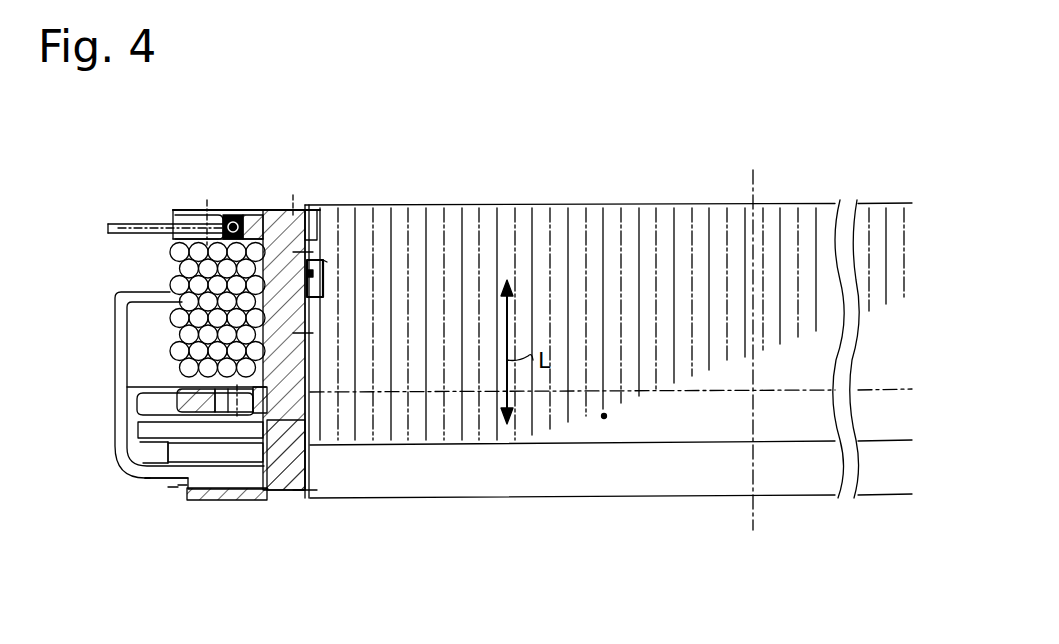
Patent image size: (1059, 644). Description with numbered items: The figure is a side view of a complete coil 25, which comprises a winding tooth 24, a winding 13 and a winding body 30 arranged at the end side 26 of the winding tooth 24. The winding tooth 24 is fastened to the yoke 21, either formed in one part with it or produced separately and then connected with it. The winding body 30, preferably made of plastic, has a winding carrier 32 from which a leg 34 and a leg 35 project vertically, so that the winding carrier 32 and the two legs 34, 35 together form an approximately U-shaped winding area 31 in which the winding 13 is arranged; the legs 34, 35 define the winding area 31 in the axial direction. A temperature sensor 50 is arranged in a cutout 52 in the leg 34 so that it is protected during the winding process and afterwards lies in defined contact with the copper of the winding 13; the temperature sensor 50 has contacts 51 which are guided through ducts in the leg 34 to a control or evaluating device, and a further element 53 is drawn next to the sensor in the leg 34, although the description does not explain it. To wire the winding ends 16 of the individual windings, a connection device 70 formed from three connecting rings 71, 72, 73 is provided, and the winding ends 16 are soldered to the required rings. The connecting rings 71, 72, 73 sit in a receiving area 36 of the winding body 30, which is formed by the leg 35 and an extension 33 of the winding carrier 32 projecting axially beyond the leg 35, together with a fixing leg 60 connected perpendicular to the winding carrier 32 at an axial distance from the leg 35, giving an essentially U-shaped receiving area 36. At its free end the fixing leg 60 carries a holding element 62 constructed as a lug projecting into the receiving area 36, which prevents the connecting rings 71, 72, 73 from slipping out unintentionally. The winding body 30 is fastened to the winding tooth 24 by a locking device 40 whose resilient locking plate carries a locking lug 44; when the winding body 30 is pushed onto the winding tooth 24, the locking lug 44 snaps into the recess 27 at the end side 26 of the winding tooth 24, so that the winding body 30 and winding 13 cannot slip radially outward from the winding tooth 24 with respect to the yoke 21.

The coil 25 is at (146, 132).
The contacts 51 is at (108, 211).
The winding 13 is at (165, 214).
The sleeve 53 is at (172, 216).
The cutout 52 is at (222, 216).
The temperature sensor 50 is at (236, 212).
The leg 34 is at (266, 212).
The locking device 40 is at (290, 265).
The locking lug 44 is at (325, 262).
The winding area 31 is at (112, 265).
The recess 27 is at (323, 283).
The winding carrier 32 is at (300, 318).
The end side 26 is at (312, 360).
The winding ends 16 is at (116, 356).
The leg 35 is at (186, 392).
The connecting ring 71 is at (145, 430).
The connection device 70 is at (104, 451).
The connecting ring 73 is at (150, 479).
The winding body 30 is at (150, 503).
The receiving area 36 is at (168, 497).
The holding element 62 is at (183, 486).
The fixing leg 60 is at (242, 494).
The connecting ring 72 is at (247, 452).
The extension 33 is at (282, 462).
The yoke 21 is at (708, 500).
The winding tooth 24 is at (604, 419).